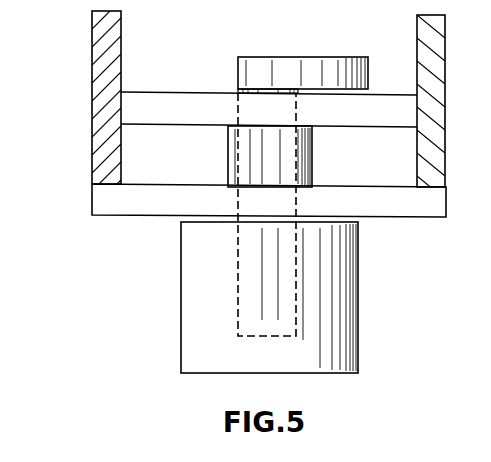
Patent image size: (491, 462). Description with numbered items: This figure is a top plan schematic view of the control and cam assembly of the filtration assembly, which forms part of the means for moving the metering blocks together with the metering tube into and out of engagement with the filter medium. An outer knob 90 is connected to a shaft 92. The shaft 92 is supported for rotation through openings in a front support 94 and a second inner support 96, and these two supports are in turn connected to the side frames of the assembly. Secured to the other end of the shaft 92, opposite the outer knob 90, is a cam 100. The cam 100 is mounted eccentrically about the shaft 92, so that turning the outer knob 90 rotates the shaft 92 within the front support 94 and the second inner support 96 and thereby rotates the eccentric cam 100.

The outer knob 90 is at (198, 324).
The shaft 92 is at (245, 298).
The front support 94 is at (133, 197).
The second inner support 96 is at (133, 109).
The cam 100 is at (319, 68).